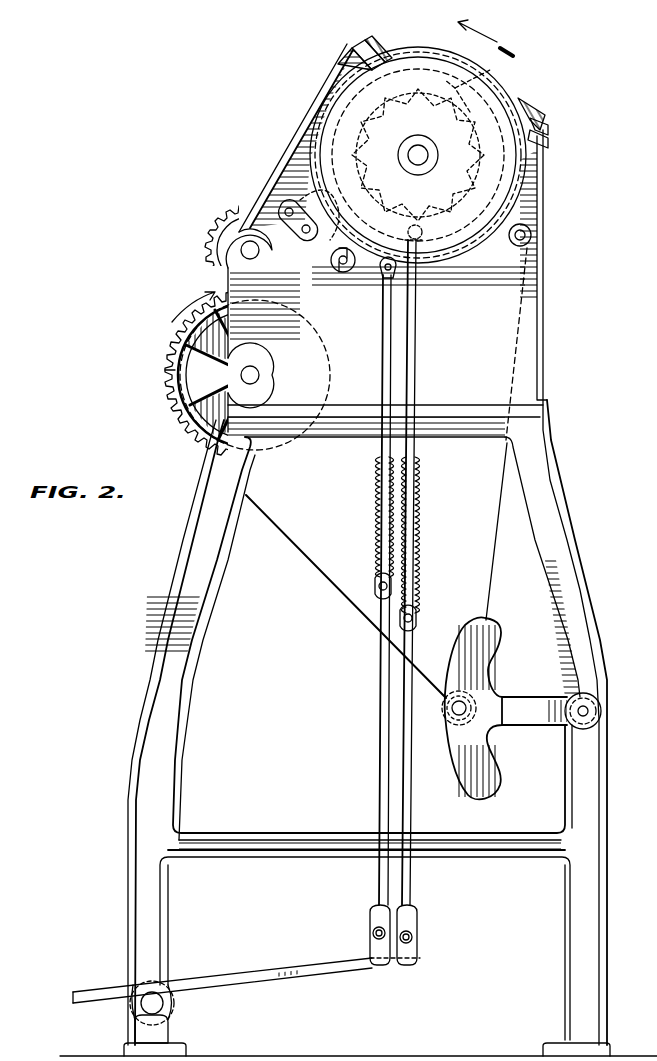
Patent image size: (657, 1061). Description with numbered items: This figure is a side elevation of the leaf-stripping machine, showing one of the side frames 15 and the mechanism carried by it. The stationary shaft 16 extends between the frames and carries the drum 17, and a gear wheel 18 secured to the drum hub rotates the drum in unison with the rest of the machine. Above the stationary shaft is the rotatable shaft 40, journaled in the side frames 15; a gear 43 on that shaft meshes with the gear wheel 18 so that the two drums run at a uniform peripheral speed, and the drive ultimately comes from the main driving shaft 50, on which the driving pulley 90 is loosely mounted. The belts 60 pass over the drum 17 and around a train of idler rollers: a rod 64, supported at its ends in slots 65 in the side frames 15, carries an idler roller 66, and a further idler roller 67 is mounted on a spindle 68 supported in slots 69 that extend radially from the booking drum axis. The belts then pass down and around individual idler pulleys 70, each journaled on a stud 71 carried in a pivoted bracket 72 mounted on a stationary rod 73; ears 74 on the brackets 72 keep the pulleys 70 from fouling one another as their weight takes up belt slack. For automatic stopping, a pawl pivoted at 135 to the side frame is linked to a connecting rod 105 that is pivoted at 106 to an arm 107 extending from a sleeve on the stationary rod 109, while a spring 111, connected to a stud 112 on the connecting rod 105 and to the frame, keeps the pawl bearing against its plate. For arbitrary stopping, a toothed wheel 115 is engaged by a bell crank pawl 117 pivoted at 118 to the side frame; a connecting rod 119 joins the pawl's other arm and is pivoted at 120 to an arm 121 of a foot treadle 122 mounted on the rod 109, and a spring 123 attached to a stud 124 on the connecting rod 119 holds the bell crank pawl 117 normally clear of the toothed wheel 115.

The side frame 15 is at (568, 518).
The stationary shaft 16 is at (262, 373).
The drum 17 is at (194, 351).
The gear wheel 18 is at (172, 374).
The rotatable shaft 40 is at (252, 259).
The gear 43 is at (208, 242).
The main driving shaft 50 is at (424, 160).
The belt 60 is at (312, 566).
The rod 64 is at (338, 64).
The slot 65 is at (350, 48).
The idler roller 66 is at (352, 52).
The idler roller 67 is at (548, 128).
The spindle 68 is at (548, 140).
The slot 69 is at (540, 118).
The idler pulley 70 is at (450, 723).
The stud 71 is at (455, 695).
The pivoted bracket 72 is at (522, 725).
The stationary rod 73 is at (598, 707).
The ear 74 is at (498, 647).
The driving pulley 90 is at (418, 47).
The connecting rod 105 is at (415, 330).
The pivot 106 is at (418, 937).
The arm 107 is at (392, 966).
The stationary rod 109 is at (164, 1003).
The spring 111 is at (421, 547).
The stud 112 is at (417, 617).
The toothed wheel 115 is at (480, 80).
The bell crank pawl 117 is at (341, 238).
The pivot 118 is at (343, 273).
The connecting rod 119 is at (383, 328).
The pivot 120 is at (371, 933).
The arm 121 is at (331, 972).
The foot treadle 122 is at (230, 977).
The spring 123 is at (375, 491).
The stud 124 is at (374, 588).
The pivot 135 is at (531, 233).